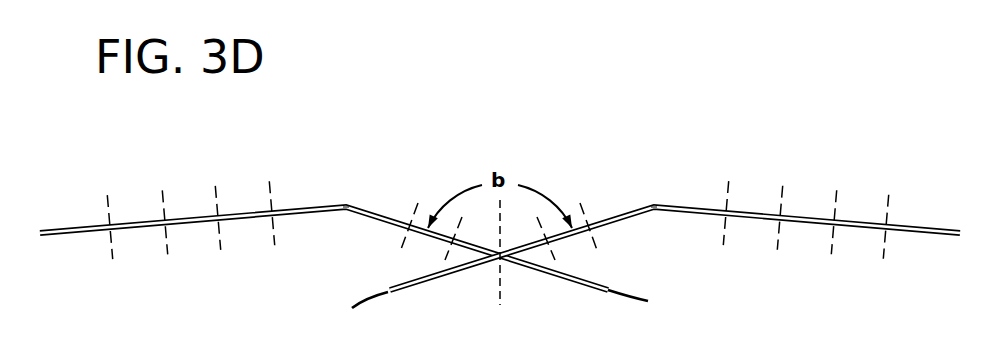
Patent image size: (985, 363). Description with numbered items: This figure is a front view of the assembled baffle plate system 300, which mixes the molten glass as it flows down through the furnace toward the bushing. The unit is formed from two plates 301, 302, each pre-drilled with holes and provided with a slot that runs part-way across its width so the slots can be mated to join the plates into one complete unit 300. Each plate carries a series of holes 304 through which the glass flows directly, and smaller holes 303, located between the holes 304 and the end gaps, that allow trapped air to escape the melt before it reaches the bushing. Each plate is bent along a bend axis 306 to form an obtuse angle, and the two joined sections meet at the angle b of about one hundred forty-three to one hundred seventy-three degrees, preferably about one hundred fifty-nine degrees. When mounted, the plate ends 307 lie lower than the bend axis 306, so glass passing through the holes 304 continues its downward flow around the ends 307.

The baffle plate system 300 is at (296, 271).
The first baffle plate 301 is at (148, 222).
The second baffle plate 302 is at (860, 223).
The smaller holes 303 is at (113, 232).
The holes 304 is at (410, 221).
The bend axis 306 is at (346, 206).
The plate ends 307 is at (352, 308).